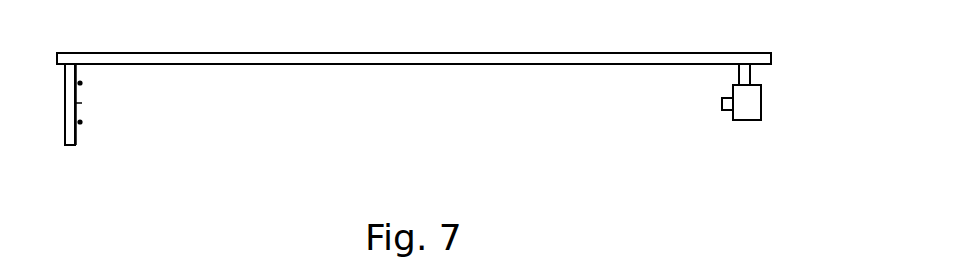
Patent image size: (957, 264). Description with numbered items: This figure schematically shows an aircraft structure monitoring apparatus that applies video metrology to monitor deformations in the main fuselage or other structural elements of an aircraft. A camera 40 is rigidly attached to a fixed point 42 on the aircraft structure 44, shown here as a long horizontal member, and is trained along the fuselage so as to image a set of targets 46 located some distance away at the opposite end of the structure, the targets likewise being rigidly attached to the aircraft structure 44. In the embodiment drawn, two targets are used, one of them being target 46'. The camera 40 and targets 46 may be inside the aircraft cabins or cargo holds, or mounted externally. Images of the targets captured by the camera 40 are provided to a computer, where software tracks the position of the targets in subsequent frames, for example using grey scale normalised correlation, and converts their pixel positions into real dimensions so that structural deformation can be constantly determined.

The camera 40 is at (743, 108).
The fixed point 42 is at (753, 70).
The aircraft structure 44 is at (330, 53).
The targets 46 is at (117, 104).
The first target 46' is at (119, 87).